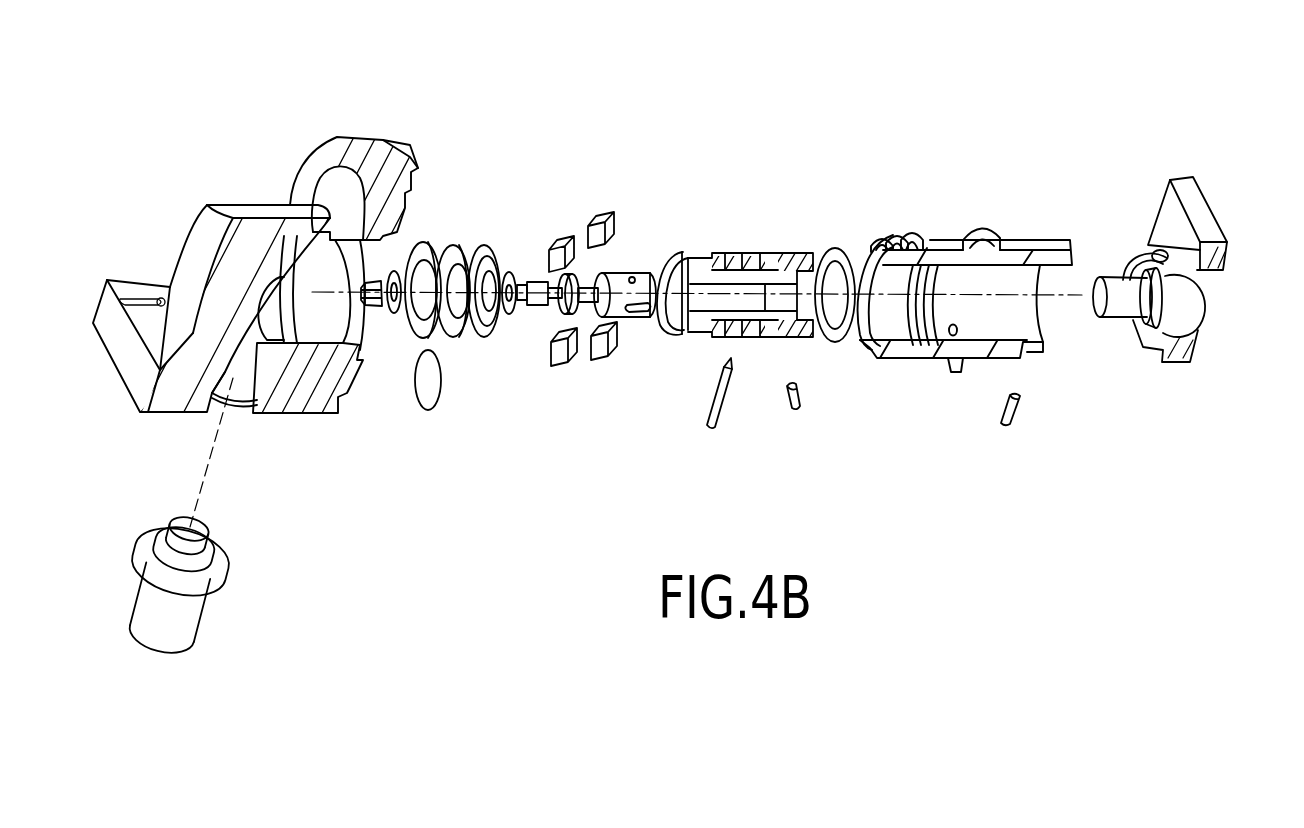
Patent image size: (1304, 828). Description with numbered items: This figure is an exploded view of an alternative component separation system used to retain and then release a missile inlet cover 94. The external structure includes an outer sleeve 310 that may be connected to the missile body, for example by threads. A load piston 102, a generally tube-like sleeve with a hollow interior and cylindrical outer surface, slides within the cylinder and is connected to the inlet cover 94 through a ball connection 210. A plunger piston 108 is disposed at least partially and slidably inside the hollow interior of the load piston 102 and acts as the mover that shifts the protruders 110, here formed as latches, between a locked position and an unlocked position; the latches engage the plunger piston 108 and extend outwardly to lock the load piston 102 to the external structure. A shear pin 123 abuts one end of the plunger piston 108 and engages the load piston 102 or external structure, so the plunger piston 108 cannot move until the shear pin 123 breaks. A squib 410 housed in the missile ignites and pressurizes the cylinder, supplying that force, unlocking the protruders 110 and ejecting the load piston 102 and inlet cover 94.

The inlet cover 94 is at (1193, 177).
The load piston 102 is at (738, 252).
The plunger piston 108 is at (532, 308).
The protruders 110 is at (612, 220).
The shear pin 123 is at (712, 400).
The ball connection 210 is at (1207, 303).
The outer sleeve 310 is at (380, 137).
The squib 410 is at (130, 603).